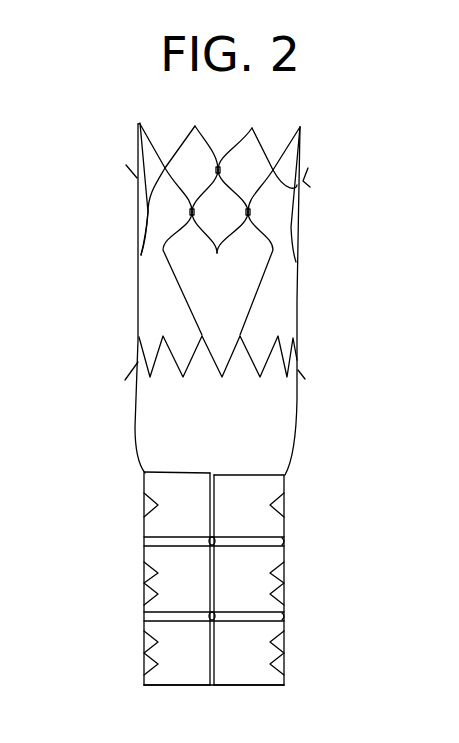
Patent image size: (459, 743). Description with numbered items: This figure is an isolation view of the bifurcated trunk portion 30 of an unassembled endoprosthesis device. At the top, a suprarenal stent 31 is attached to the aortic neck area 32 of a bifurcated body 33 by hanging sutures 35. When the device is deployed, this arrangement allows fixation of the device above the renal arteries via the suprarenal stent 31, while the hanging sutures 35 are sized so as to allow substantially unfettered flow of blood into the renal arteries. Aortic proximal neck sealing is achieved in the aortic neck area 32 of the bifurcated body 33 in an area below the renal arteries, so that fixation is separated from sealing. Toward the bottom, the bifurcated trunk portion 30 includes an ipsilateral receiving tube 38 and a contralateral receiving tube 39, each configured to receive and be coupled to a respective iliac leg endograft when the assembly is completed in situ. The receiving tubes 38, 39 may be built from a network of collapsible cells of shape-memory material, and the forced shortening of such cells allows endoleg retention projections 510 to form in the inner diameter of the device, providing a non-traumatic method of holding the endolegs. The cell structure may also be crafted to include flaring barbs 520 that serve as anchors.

The bifurcated trunk portion 30 is at (108, 140).
The suprarenal stent 31 is at (300, 128).
The endoleg retention projections 510 is at (303, 181).
The hanging sutures 35 is at (298, 293).
The aortic neck area 32 is at (278, 418).
The bifurcated body 33 is at (217, 500).
The flaring barbs 520 is at (285, 643).
The ipsilateral receiving tube 38 is at (167, 687).
The contralateral receiving tube 39 is at (260, 687).